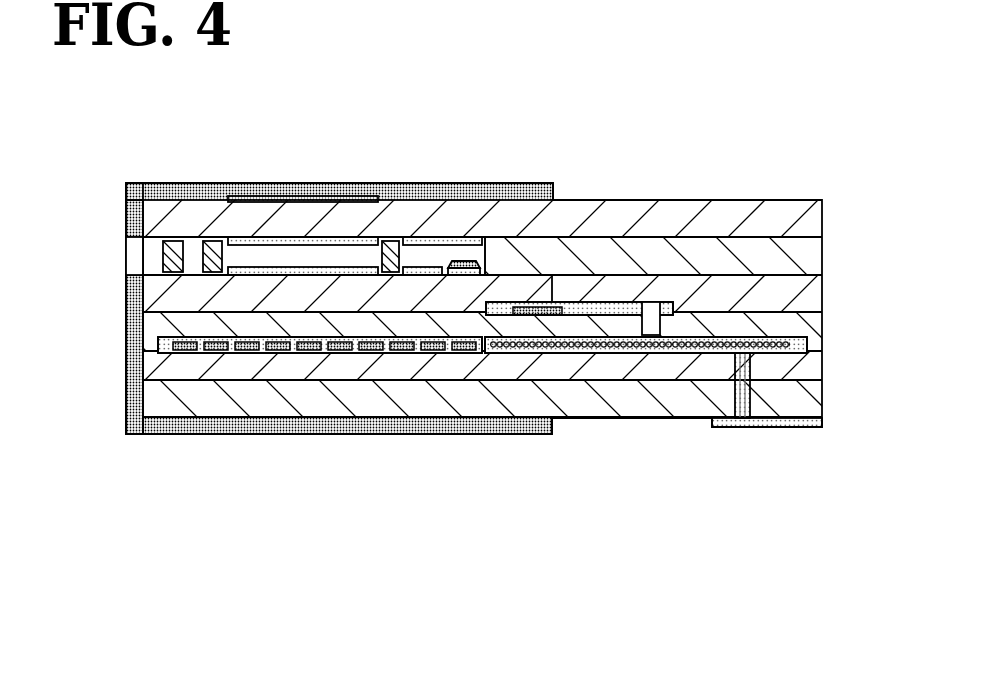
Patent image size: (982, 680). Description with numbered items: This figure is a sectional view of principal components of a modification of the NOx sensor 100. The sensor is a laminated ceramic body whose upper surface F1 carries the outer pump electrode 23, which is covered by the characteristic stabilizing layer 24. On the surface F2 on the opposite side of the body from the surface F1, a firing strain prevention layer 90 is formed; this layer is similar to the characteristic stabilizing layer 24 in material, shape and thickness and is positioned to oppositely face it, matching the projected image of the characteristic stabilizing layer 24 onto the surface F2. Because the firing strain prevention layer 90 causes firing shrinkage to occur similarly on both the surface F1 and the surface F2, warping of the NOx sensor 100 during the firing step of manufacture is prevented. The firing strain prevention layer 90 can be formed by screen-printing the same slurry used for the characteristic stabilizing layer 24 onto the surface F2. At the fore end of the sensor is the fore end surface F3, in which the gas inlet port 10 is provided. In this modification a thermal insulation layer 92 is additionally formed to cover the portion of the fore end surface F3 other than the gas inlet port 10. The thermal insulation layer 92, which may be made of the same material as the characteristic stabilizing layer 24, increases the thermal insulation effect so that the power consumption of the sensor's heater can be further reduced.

The NOx sensor 100 is at (770, 174).
The characteristic stabilizing layer 24 is at (259, 183).
The outer pump electrode 23 is at (332, 196).
The surface F1 is at (503, 183).
The gas inlet port 10 is at (155, 252).
The fore end surface F3 is at (127, 331).
The thermal insulation layer 92 is at (127, 376).
The firing strain prevention layer 90 is at (308, 418).
The surface F2 is at (499, 434).